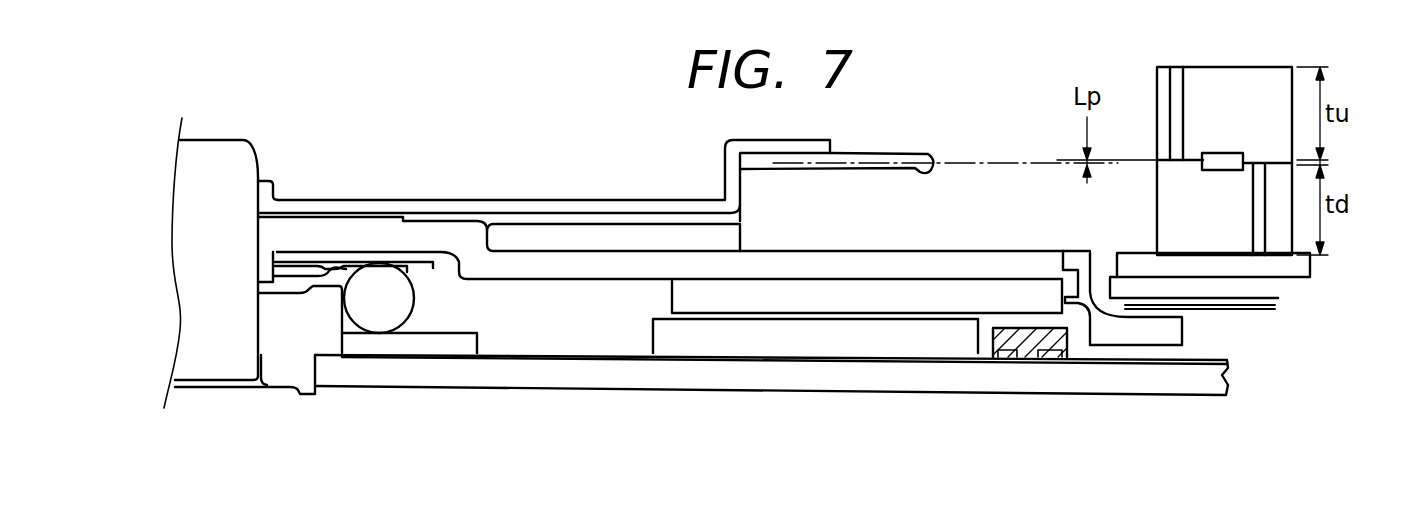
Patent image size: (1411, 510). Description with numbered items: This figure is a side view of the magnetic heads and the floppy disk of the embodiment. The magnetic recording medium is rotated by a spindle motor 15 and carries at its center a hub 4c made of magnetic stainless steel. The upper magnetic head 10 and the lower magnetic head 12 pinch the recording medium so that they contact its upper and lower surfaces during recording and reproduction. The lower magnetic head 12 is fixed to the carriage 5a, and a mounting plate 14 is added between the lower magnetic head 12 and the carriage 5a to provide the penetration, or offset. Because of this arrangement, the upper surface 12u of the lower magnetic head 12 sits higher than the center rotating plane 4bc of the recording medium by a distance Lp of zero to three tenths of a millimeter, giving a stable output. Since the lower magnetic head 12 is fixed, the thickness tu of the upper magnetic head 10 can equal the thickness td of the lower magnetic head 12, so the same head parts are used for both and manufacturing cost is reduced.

The hub 4c is at (562, 207).
The center rotating plane 4bc is at (988, 166).
The upper magnetic head 10 is at (1220, 66).
The lower magnetic head 12 is at (1156, 228).
The upper surface of the lower magnetic head 12u is at (1118, 158).
The mounting plate 14 is at (1318, 268).
The carriage 5a is at (1248, 292).
The spindle motor 15 is at (621, 403).